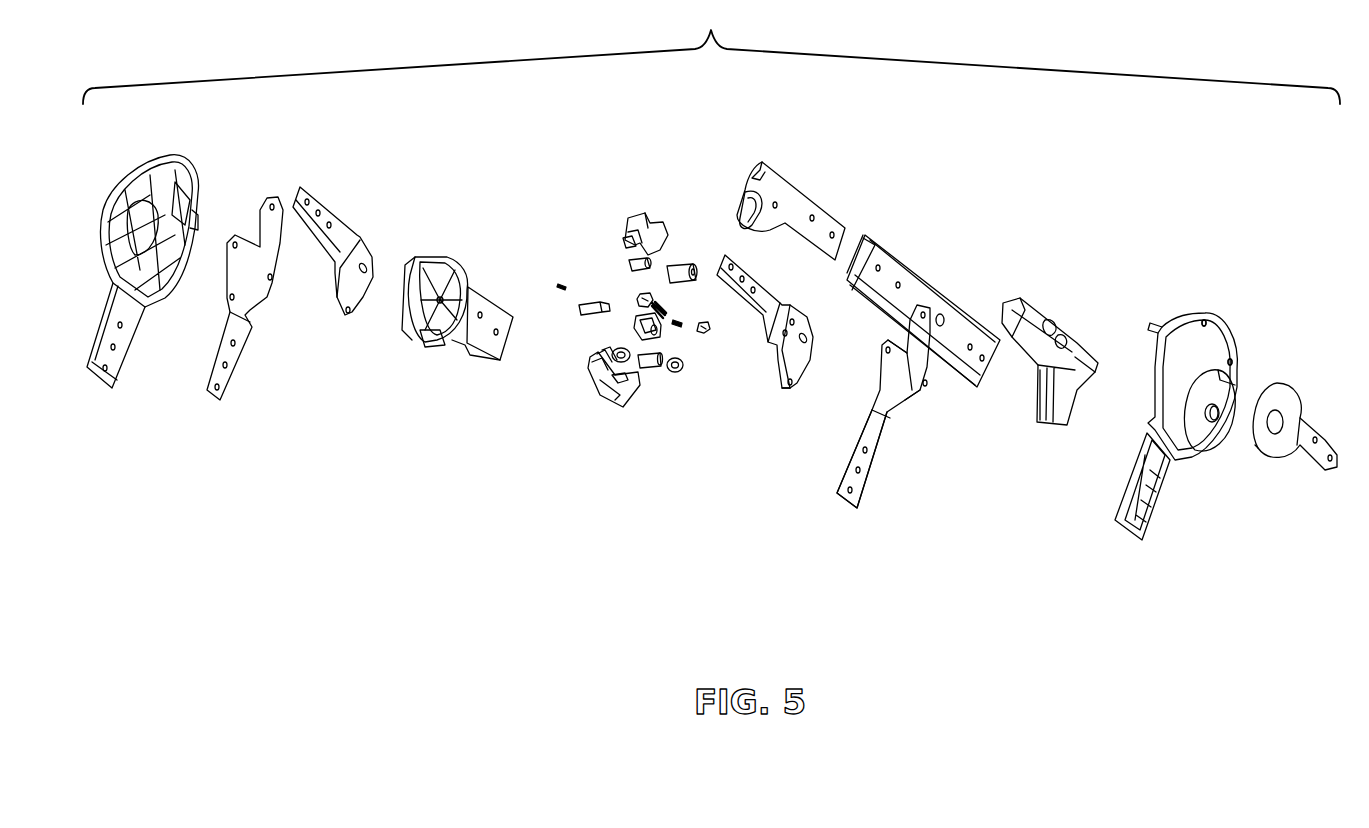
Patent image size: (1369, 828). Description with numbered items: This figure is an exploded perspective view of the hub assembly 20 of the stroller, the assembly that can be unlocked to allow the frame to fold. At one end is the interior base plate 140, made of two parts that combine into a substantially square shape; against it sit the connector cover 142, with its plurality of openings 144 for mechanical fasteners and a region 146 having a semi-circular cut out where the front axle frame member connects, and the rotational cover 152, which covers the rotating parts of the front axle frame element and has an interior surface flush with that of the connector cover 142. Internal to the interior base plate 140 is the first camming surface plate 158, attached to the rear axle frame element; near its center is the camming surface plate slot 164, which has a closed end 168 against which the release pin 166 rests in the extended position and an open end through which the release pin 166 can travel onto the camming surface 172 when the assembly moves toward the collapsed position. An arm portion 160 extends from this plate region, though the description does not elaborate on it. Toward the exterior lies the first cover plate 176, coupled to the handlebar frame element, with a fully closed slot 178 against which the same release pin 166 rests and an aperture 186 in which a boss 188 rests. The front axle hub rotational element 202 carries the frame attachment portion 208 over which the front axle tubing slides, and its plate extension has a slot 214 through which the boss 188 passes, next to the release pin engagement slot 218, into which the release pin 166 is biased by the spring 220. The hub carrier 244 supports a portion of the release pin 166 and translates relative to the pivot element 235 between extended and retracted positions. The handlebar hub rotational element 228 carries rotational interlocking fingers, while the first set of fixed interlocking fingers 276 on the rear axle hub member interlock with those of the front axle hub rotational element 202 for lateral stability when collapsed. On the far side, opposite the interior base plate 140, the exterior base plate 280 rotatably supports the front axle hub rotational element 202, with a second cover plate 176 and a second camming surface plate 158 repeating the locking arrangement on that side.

The hub assembly 20 is at (711, 53).
The exterior base plate 280 is at (133, 173).
The camming surface plate 158 is at (250, 290).
The cover plate 176 is at (353, 292).
The fully closed slot 178 is at (803, 336).
The aperture 186 is at (790, 385).
The front axle hub rotational element 202 is at (470, 252).
The frame attachment portion 208 is at (478, 343).
The pivot element 235 is at (640, 212).
The hub carrier 244 is at (628, 318).
The release pin 166 is at (592, 315).
The spring 220 is at (652, 305).
The boss 188 is at (647, 368).
The first set of fixed interlocking fingers 276 is at (615, 410).
The slot 214 is at (745, 200).
The release pin engagement slot 218 is at (782, 172).
The camming surface 172 is at (910, 298).
The camming surface plate slot 164 is at (900, 365).
The closed end 168 is at (933, 363).
The arm 160 is at (895, 412).
The handlebar hub rotational element 228 is at (1062, 432).
The connector cover 142 is at (1185, 355).
The openings 144 is at (1233, 362).
The region 146 is at (1215, 433).
The rotational cover 152 is at (1290, 398).
The interior base plate 140 is at (1262, 485).